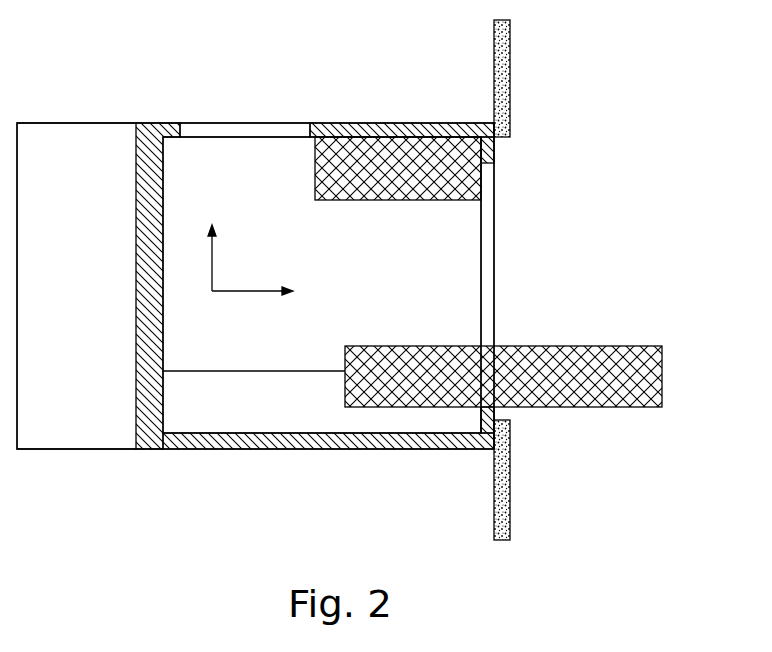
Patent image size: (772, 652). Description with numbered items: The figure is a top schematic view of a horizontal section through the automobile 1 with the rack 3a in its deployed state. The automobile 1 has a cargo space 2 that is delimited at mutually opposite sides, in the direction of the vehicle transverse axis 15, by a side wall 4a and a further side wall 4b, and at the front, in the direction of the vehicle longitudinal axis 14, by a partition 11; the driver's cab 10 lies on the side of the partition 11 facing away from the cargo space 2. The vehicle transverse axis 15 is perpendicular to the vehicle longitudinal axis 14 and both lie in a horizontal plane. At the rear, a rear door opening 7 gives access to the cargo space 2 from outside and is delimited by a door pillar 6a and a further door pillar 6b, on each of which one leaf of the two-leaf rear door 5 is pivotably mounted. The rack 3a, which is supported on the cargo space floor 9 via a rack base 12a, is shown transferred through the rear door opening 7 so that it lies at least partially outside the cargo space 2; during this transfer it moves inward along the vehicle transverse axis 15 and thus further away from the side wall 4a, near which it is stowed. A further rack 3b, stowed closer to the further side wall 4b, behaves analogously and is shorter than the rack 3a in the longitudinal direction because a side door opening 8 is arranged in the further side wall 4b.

The automobile 1 is at (604, 260).
The cargo space 2 is at (470, 285).
The rack 3a is at (415, 398).
The further rack 3b is at (445, 130).
The side wall 4a is at (268, 450).
The further side wall 4b is at (363, 123).
The rear door 5 is at (511, 68).
The door pillar 6a is at (509, 413).
The further door pillar 6b is at (497, 150).
The rear door opening 7 is at (497, 197).
The side door opening 8 is at (268, 130).
The cargo space floor 9 is at (440, 240).
The driver's cab 10 is at (65, 138).
The partition 11 is at (150, 133).
The rack base 12a is at (270, 392).
The vehicle longitudinal axis 14 is at (250, 290).
The vehicle transverse axis 15 is at (215, 243).